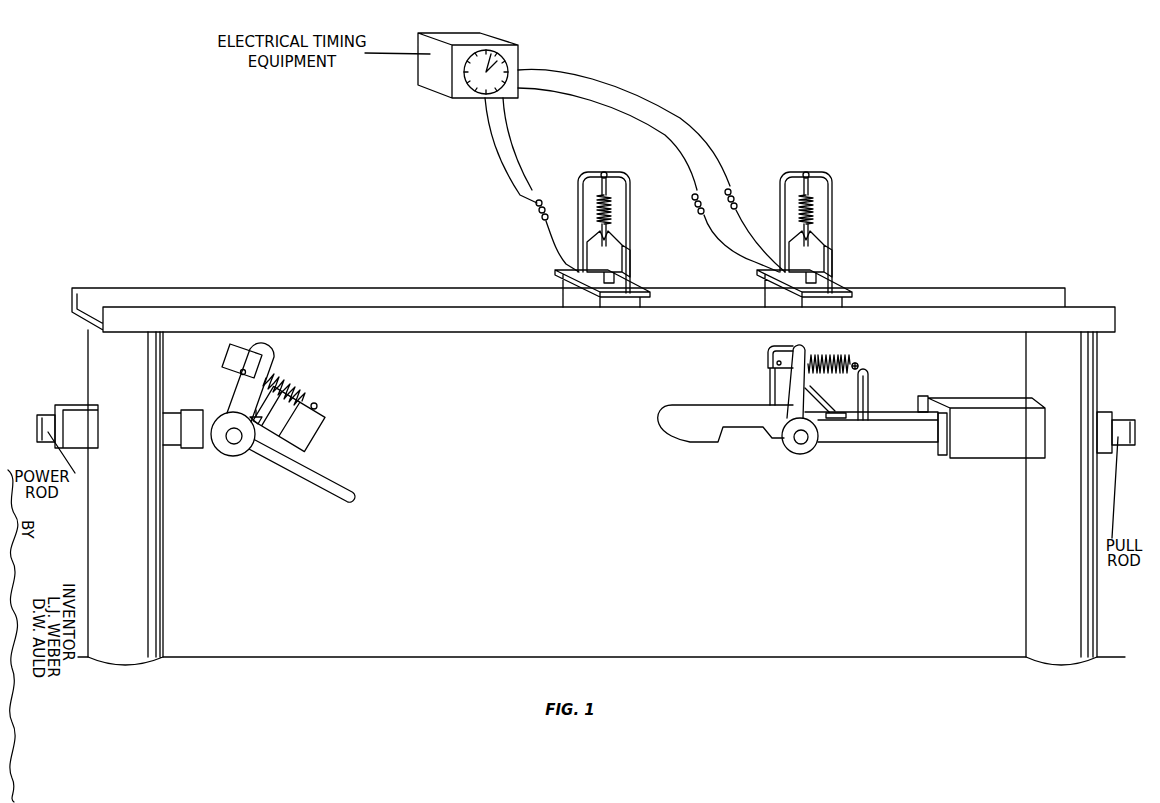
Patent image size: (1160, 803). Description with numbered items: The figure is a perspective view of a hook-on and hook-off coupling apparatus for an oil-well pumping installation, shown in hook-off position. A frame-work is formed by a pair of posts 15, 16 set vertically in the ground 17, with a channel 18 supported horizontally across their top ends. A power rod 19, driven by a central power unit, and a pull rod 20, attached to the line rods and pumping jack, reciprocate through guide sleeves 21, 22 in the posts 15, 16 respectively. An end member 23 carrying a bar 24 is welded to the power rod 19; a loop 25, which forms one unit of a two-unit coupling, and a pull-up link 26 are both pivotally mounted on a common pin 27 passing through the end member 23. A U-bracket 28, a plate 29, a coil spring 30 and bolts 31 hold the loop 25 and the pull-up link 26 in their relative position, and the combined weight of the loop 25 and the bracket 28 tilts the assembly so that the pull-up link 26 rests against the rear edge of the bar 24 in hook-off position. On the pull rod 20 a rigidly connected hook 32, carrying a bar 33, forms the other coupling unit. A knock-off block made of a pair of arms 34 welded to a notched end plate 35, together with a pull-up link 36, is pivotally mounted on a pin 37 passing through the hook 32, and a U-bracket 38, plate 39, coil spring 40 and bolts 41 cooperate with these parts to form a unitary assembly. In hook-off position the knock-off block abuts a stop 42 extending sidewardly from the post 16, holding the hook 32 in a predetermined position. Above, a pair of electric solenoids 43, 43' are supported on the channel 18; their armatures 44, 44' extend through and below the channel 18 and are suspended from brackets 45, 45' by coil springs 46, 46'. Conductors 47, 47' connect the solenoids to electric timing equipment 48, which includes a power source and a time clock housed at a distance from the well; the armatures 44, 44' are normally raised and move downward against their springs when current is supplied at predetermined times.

The post 15 is at (140, 585).
The post 16 is at (1048, 585).
The ground 17 is at (527, 656).
The channel 18 is at (370, 296).
The power rod 19 is at (56, 422).
The pull rod 20 is at (1121, 445).
The guide sleeve 21 is at (88, 417).
The guide sleeve 22 is at (1102, 418).
The end member 23 is at (194, 438).
The bar 24 is at (261, 426).
The loop 25 is at (340, 500).
The pull-up link 26 is at (275, 364).
The pin 27 is at (235, 442).
The U-bracket 28 is at (318, 436).
The plate 29 is at (235, 360).
The coil spring 30 is at (295, 392).
The bolts 31 is at (241, 372).
The hook 32 is at (678, 418).
The bar 33 is at (833, 418).
The arms 34 is at (905, 437).
The notched end plate 35 is at (942, 442).
The pull-up link 36 is at (802, 343).
The pin 37 is at (806, 442).
The U-bracket 38 is at (870, 382).
The plate 39 is at (768, 358).
The coil spring 40 is at (838, 360).
The bolts 41 is at (778, 364).
The stop 42 is at (970, 418).
The electric solenoid 43 is at (625, 287).
The electric solenoid 43' is at (829, 287).
The armature 44 is at (627, 257).
The armature 44' is at (835, 257).
The bracket 45 is at (625, 232).
The bracket 45' is at (830, 232).
The coil spring 46 is at (577, 209).
The coil spring 46' is at (775, 209).
The conductor 47 is at (508, 185).
The conductor 47' is at (651, 170).
The electric timing equipment 48 is at (468, 95).